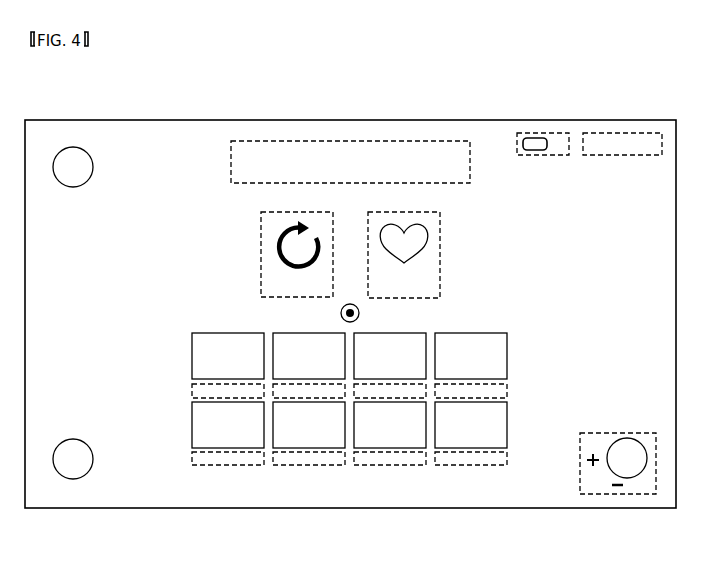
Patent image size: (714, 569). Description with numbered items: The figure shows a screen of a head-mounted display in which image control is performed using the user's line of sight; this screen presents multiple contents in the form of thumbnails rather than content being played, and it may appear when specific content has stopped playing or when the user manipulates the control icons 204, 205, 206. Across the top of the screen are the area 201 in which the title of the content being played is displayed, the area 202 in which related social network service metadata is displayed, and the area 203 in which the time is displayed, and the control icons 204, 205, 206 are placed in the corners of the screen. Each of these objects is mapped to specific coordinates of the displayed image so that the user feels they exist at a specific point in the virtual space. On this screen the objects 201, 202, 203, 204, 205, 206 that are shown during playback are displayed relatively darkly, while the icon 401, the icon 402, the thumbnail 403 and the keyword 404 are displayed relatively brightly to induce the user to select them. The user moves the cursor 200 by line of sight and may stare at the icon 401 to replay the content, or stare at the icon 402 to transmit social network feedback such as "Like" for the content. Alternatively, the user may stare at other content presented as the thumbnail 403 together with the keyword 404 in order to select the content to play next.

The cursor 200 is at (340, 312).
The area in which a title of content being played is displayed 201 is at (350, 141).
The area in which related SNS metadata is displayed 202 is at (544, 133).
The area in which the time is displayed 203 is at (622, 133).
The control icon 204 is at (78, 147).
The control icon 205 is at (76, 479).
The control icon 206 is at (619, 494).
The icon to replay the content 401 is at (261, 252).
The icon to transmit a SNS feedback 402 is at (440, 253).
The thumbnail 403 is at (192, 352).
The keyword 404 is at (192, 390).